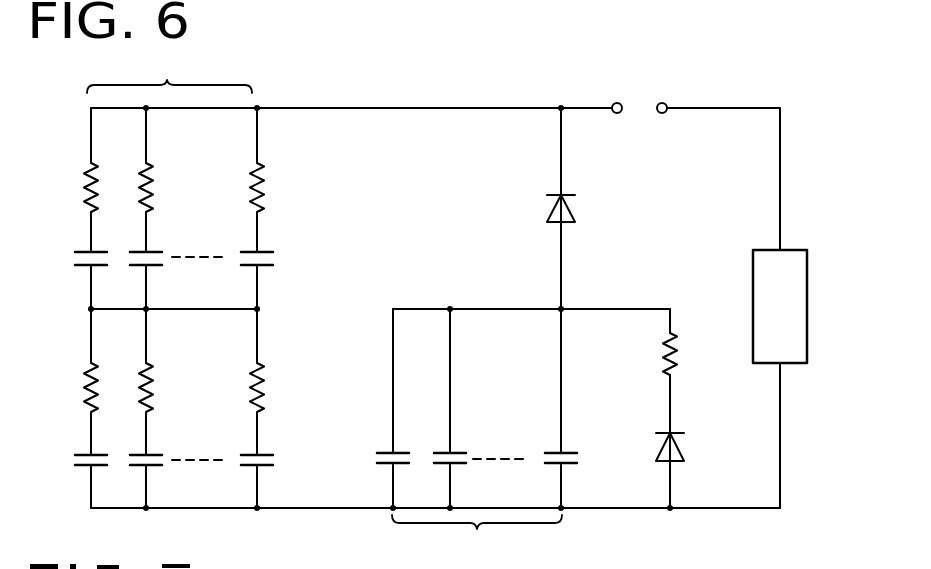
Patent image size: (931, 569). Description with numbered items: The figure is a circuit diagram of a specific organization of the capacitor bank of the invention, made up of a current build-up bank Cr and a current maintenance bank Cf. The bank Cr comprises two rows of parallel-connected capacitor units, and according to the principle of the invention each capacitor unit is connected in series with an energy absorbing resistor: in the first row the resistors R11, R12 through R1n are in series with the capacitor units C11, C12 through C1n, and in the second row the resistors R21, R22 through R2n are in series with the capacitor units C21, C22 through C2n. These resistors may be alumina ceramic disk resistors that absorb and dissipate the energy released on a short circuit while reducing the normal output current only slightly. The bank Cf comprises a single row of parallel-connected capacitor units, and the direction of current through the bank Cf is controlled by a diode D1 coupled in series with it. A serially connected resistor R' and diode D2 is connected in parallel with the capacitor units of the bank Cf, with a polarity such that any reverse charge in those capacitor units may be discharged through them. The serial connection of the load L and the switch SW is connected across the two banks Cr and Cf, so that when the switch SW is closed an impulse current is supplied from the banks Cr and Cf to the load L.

The current build-up bank Cr is at (169, 74).
The current maintenance bank Cf is at (477, 539).
The energy absorbing resistor R11 is at (65, 184).
The energy absorbing resistor R12 is at (127, 185).
The energy absorbing resistor R1n is at (235, 185).
The capacitor unit C11 is at (71, 246).
The capacitor unit C12 is at (133, 246).
The capacitor unit C1n is at (240, 246).
The energy absorbing resistor R21 is at (65, 382).
The energy absorbing resistor R22 is at (128, 382).
The energy absorbing resistor R2n is at (235, 382).
The capacitor unit C21 is at (71, 474).
The capacitor unit C22 is at (133, 474).
The capacitor unit C2n is at (240, 474).
The switch SW is at (639, 92).
The diode D1 is at (583, 201).
The diode D2 is at (692, 444).
The load L is at (791, 306).
The resistor R' is at (686, 354).